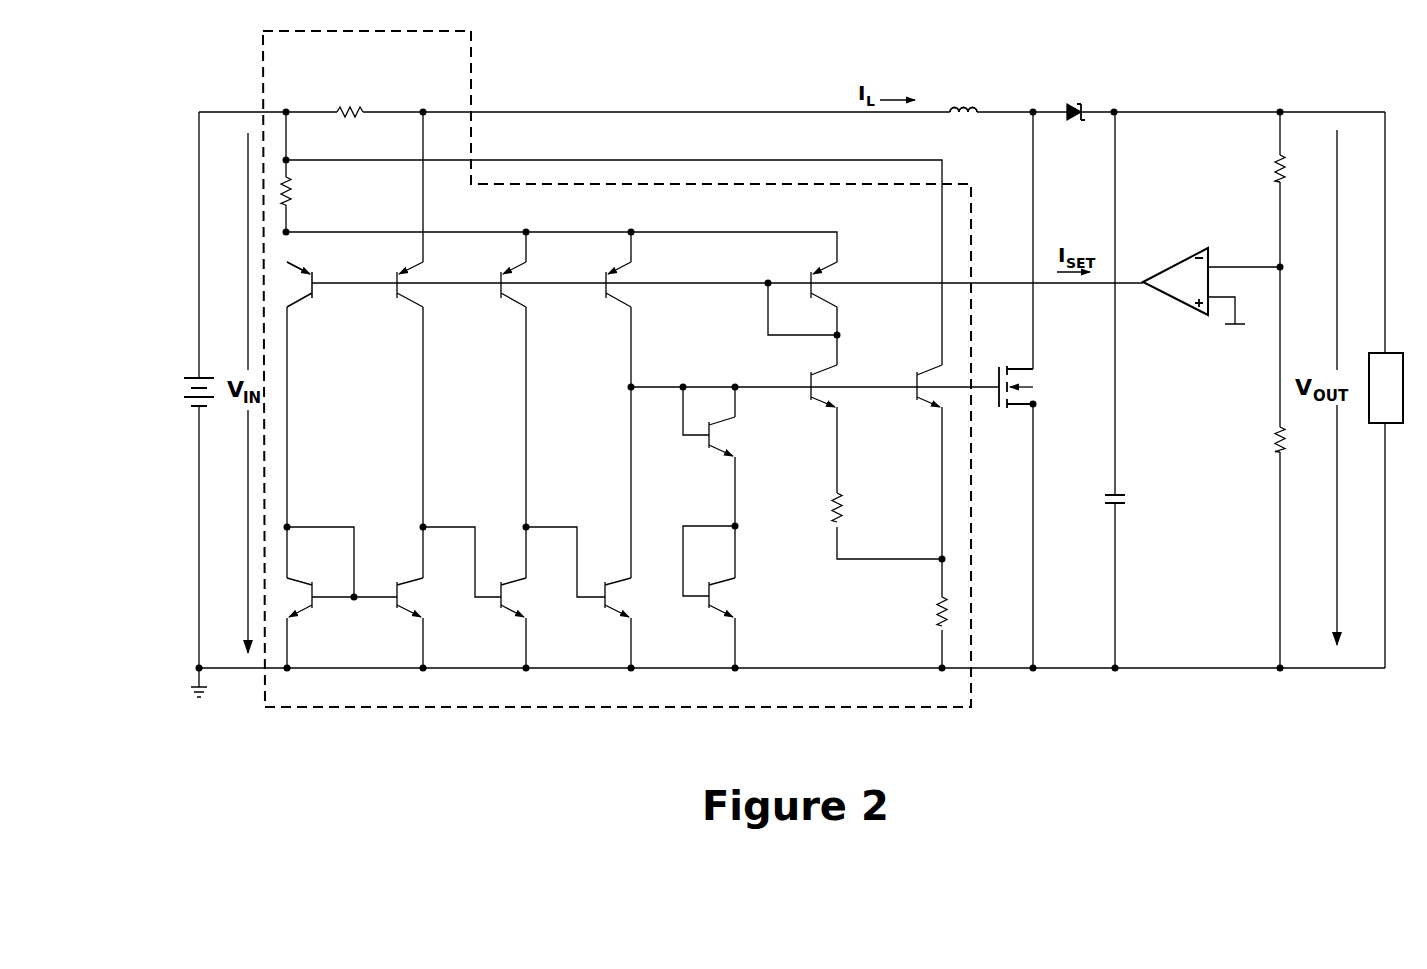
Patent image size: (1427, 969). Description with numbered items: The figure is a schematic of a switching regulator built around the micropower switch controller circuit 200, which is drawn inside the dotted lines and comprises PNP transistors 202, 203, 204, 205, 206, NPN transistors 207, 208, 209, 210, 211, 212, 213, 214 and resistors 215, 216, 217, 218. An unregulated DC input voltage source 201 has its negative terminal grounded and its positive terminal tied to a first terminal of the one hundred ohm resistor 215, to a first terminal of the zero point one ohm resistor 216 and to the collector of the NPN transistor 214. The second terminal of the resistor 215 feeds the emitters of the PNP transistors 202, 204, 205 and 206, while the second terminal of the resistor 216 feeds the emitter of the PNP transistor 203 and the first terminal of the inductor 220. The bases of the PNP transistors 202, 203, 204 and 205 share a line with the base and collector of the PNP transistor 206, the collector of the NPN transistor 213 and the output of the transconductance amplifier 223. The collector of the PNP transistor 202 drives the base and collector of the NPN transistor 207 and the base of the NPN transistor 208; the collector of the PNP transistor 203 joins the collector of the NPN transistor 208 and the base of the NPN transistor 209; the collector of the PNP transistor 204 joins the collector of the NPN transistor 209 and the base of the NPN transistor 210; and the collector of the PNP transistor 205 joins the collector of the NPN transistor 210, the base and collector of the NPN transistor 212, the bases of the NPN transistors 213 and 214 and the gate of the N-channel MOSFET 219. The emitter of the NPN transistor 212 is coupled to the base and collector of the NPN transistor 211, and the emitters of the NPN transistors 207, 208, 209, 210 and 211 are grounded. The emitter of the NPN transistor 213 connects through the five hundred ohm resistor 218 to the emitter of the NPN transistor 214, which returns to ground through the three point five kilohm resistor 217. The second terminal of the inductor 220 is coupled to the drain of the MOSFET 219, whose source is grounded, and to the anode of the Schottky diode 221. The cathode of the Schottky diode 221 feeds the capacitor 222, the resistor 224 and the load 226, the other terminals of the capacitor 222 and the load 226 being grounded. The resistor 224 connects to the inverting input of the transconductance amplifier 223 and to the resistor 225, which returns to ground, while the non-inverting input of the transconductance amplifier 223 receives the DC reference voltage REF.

The micropower switch controller circuit 200 is at (480, 80).
The unregulated DC input voltage source 201 is at (214, 377).
The PNP transistor 202 is at (311, 301).
The PNP transistor 203 is at (401, 301).
The PNP transistor 204 is at (503, 301).
The PNP transistor 205 is at (608, 301).
The PNP transistor 206 is at (813, 296).
The NPN transistor 207 is at (313, 615).
The NPN transistor 208 is at (404, 615).
The NPN transistor 209 is at (506, 614).
The NPN transistor 210 is at (608, 615).
The NPN transistor 211 is at (716, 615).
The NPN transistor 212 is at (712, 453).
The NPN transistor 213 is at (816, 404).
The NPN transistor 214 is at (921, 404).
The resistor 215 is at (322, 202).
The resistor 216 is at (356, 84).
The resistor 217 is at (904, 611).
The resistor 218 is at (873, 510).
The N-channel MOSFET 219 is at (1044, 387).
The inductor 220 is at (959, 78).
The Schottky diode 221 is at (1078, 97).
The capacitor 222 is at (1091, 500).
The transconductance amplifier 223 is at (1208, 294).
The resistor 224 is at (1257, 167).
The resistor 225 is at (1258, 440).
The load 226 is at (1374, 374).